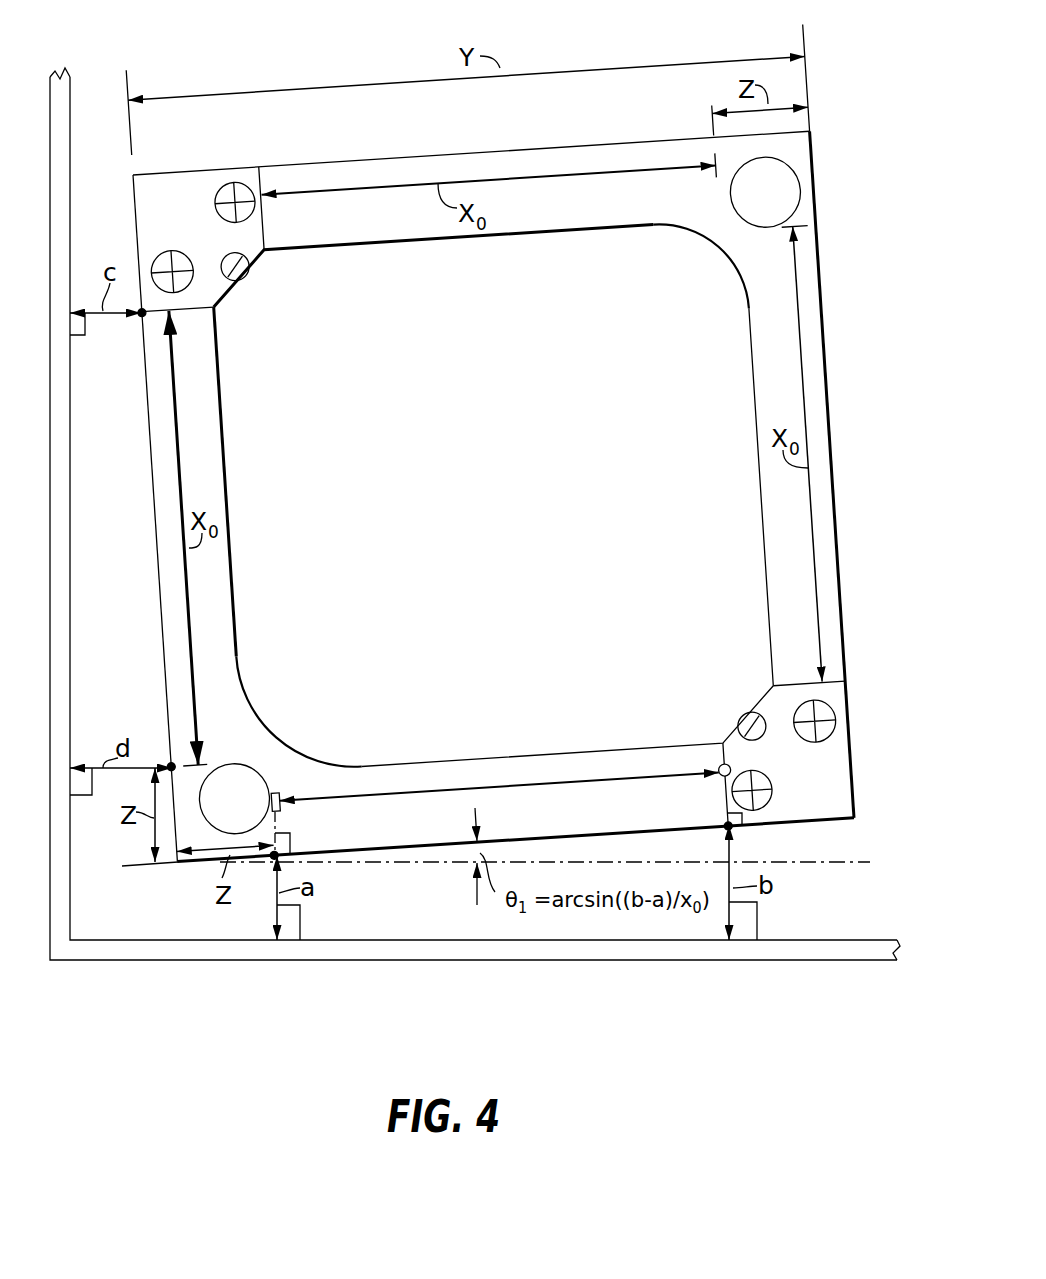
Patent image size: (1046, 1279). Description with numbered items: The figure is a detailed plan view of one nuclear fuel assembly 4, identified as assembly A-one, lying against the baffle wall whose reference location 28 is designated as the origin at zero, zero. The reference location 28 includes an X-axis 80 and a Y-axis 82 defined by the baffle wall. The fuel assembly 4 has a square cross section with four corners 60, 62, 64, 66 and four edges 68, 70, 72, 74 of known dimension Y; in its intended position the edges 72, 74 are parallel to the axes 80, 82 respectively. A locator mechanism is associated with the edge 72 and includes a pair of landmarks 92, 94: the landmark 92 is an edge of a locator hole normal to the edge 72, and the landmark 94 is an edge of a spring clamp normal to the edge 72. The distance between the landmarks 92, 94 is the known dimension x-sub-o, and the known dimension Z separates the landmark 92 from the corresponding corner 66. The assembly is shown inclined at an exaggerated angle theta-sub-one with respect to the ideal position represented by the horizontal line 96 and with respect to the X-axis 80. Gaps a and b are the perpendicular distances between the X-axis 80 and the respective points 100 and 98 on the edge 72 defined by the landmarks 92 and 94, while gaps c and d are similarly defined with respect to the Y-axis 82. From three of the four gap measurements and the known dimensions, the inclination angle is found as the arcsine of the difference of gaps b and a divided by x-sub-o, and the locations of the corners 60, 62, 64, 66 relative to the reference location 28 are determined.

The fuel assembly 4 is at (830, 376).
The reference location 28 is at (45, 963).
The corner 60 is at (133, 175).
The corner 62 is at (810, 132).
The corner 64 is at (855, 817).
The corner 66 is at (178, 866).
The edge 68 is at (475, 152).
The edge 70 is at (836, 492).
The edge 72 is at (632, 830).
The edge 74 is at (158, 556).
The X-axis 80 is at (340, 963).
The Y-axis 82 is at (50, 760).
The landmark 92 is at (280, 793).
The landmark 94 is at (720, 765).
The horizontal line 96 is at (812, 864).
The point 98 is at (140, 317).
The point 100 is at (168, 766).